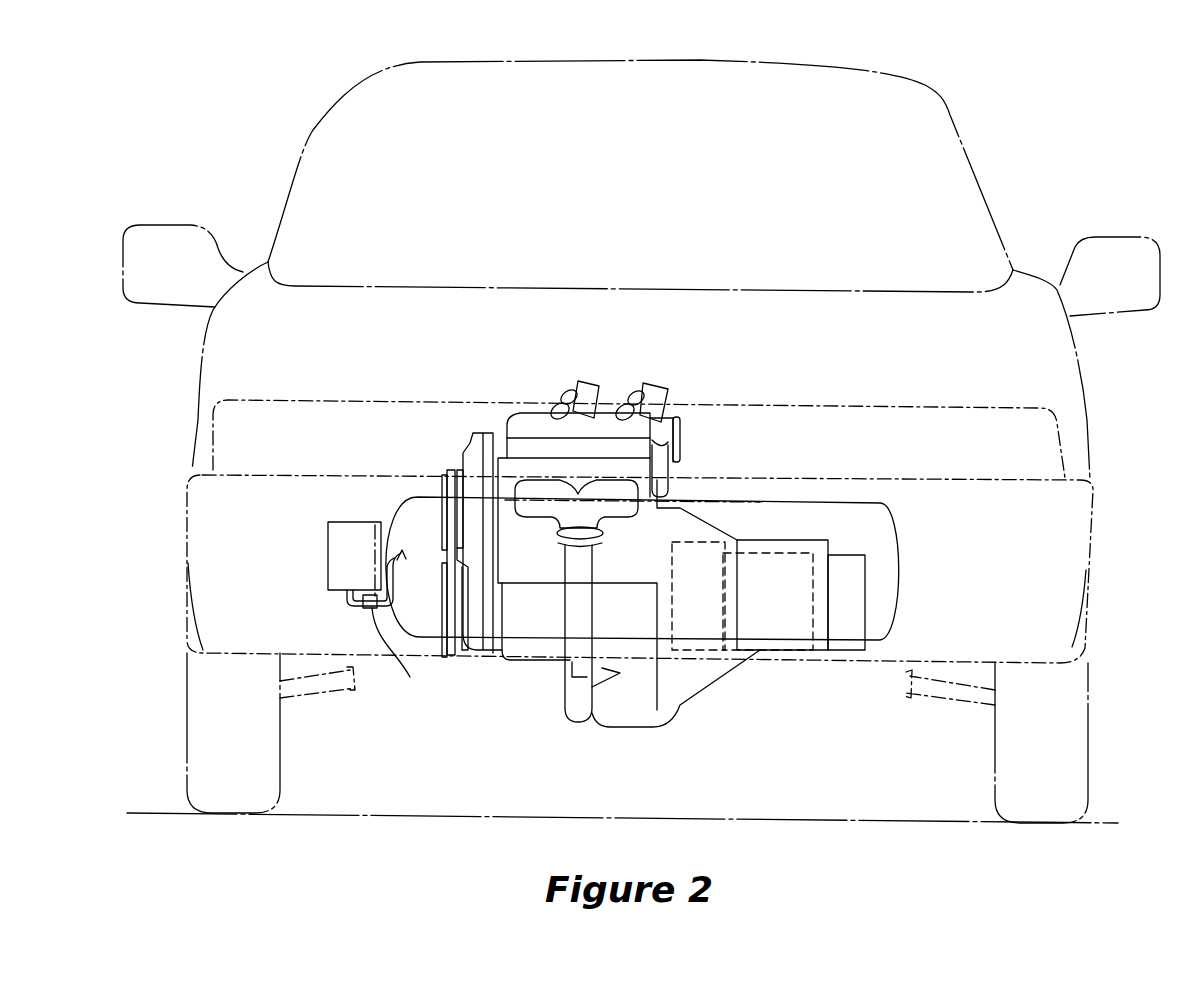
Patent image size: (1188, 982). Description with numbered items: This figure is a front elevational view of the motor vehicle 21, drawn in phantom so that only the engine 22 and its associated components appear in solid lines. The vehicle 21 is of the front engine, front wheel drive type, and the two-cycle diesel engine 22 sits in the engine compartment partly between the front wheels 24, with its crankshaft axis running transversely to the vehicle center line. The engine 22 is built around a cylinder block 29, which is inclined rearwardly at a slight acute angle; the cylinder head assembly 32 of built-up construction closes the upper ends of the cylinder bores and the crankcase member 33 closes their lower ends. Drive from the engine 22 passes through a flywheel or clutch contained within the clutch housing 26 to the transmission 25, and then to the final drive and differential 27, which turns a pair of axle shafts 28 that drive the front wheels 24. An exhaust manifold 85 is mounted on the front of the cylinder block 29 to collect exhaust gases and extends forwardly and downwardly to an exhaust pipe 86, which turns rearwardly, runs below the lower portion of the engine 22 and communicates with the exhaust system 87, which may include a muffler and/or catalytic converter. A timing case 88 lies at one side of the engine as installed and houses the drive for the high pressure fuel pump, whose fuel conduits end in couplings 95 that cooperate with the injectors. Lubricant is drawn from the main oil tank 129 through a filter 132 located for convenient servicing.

The motor vehicle 21 is at (983, 143).
The engine 22 is at (458, 450).
The front wheels 24 is at (280, 775).
The transmission 25 is at (830, 540).
The clutch housing 26 is at (787, 553).
The differential 27 is at (693, 541).
The axle shafts 28 is at (300, 697).
The cylinder block 29 is at (645, 537).
The cylinder head assembly 32 is at (517, 418).
The crankcase member 33 is at (522, 652).
The exhaust manifold 85 is at (543, 490).
The exhaust pipe 86 is at (583, 615).
The exhaust system 87 is at (580, 702).
The timing case 88 is at (478, 425).
The couplings 95 is at (640, 387).
The main oil tank 129 is at (328, 563).
The filter 132 is at (398, 651).